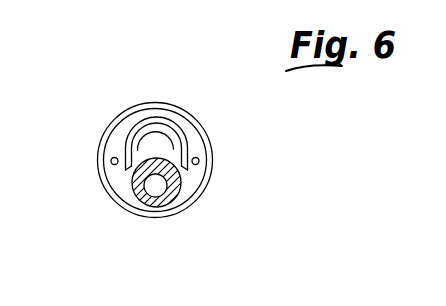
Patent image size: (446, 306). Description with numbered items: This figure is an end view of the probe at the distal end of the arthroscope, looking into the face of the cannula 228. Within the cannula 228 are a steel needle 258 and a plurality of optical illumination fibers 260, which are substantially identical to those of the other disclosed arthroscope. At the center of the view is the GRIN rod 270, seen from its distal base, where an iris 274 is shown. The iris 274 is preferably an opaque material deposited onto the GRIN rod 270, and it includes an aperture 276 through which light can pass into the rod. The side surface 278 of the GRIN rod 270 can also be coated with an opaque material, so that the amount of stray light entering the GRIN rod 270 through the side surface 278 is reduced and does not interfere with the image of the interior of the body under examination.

The cannula 228 is at (128, 109).
The side surface 278 is at (126, 143).
The optical illumination fibers 260 is at (210, 158).
The steel needle 258 is at (157, 128).
The GRIN rod 270 is at (163, 148).
The aperture 276 is at (164, 196).
The iris 274 is at (160, 181).